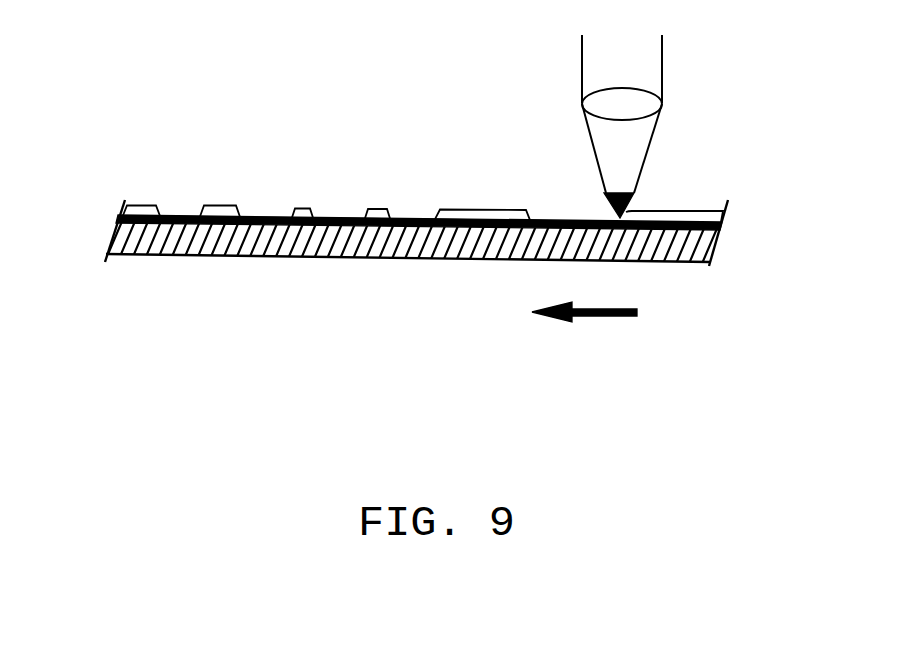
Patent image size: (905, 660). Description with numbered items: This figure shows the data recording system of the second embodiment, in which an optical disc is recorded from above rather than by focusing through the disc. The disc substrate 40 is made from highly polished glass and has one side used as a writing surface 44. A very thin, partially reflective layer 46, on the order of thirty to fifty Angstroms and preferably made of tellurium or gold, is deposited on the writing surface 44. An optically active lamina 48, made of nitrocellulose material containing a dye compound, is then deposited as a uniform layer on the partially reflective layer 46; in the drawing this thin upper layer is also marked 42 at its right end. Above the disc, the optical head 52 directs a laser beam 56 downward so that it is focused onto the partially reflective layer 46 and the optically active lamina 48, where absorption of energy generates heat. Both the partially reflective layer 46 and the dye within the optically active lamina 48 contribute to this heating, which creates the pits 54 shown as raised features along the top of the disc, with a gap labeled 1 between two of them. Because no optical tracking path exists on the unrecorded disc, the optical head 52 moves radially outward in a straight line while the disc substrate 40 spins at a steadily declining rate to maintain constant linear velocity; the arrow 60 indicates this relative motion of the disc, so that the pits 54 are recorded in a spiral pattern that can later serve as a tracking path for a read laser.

The disc substrate 40 is at (684, 262).
The thin film layer 42 is at (722, 206).
The writing surface 44 is at (116, 214).
The partially reflective layer 46 is at (727, 240).
The optically active lamina 48 is at (642, 212).
The optical head 52 is at (602, 72).
The pits 54 is at (174, 214).
The laser beam 56 is at (594, 158).
The direction of substrate motion 60 is at (600, 317).
The gap 1 is at (419, 172).